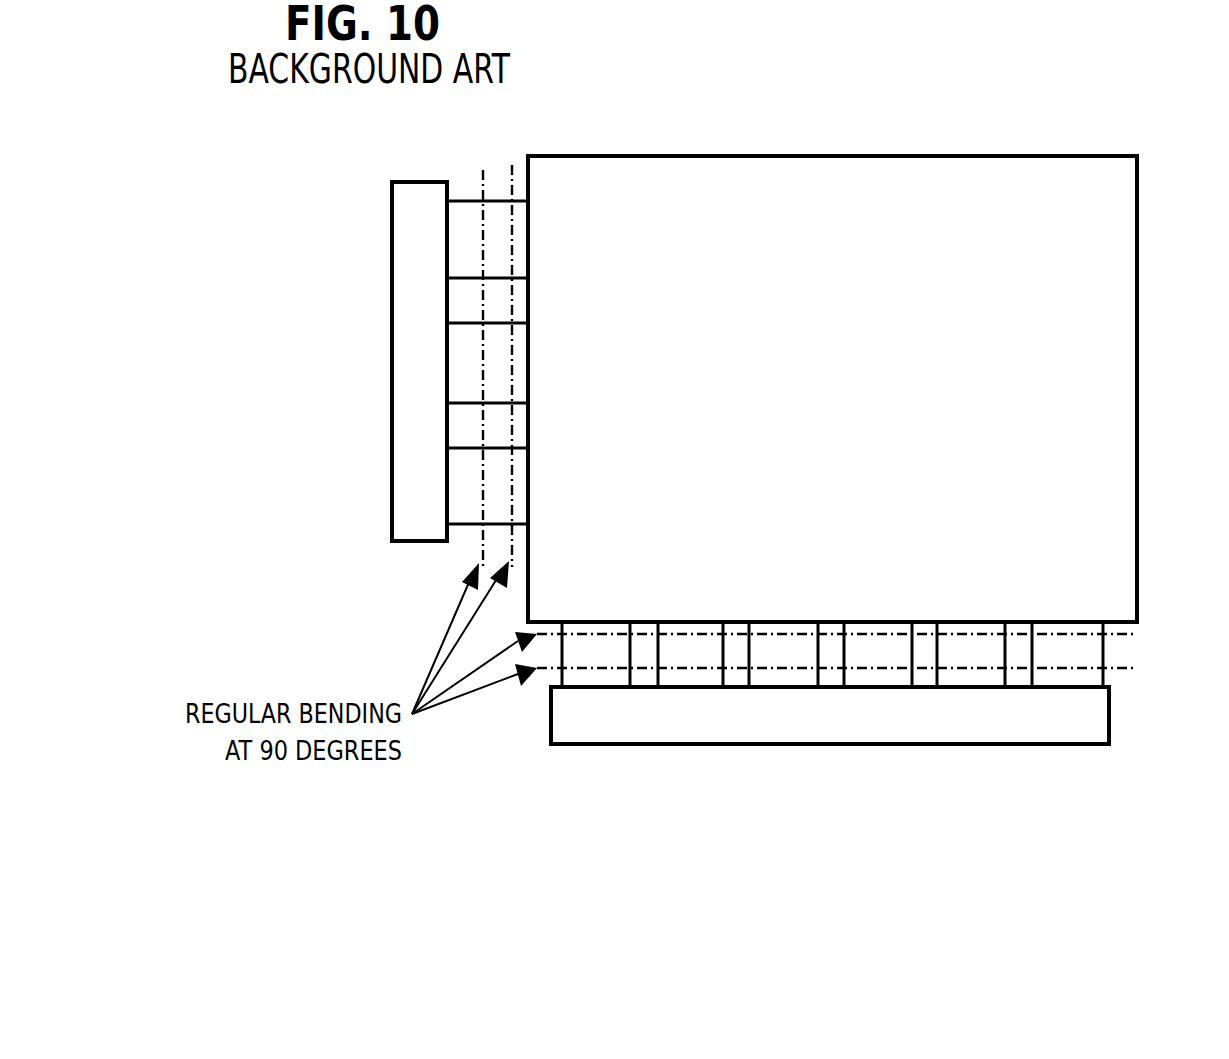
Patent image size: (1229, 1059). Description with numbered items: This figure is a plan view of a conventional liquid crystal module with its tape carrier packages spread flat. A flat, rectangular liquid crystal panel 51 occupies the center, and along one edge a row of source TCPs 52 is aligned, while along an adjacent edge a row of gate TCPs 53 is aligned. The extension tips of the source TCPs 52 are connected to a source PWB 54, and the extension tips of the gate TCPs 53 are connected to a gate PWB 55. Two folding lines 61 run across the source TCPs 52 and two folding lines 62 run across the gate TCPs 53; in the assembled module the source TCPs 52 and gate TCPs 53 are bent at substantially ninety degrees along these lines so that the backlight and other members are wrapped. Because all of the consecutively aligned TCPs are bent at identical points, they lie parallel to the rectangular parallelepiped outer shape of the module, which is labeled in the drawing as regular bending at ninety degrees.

The liquid crystal panel 51 is at (1097, 392).
The source TCPs 52 is at (1093, 653).
The gate TCPs 53 is at (518, 357).
The source PWB 54 is at (1095, 718).
The gate PWB 55 is at (405, 352).
The folding lines 61 is at (770, 637).
The folding lines 62 is at (480, 431).